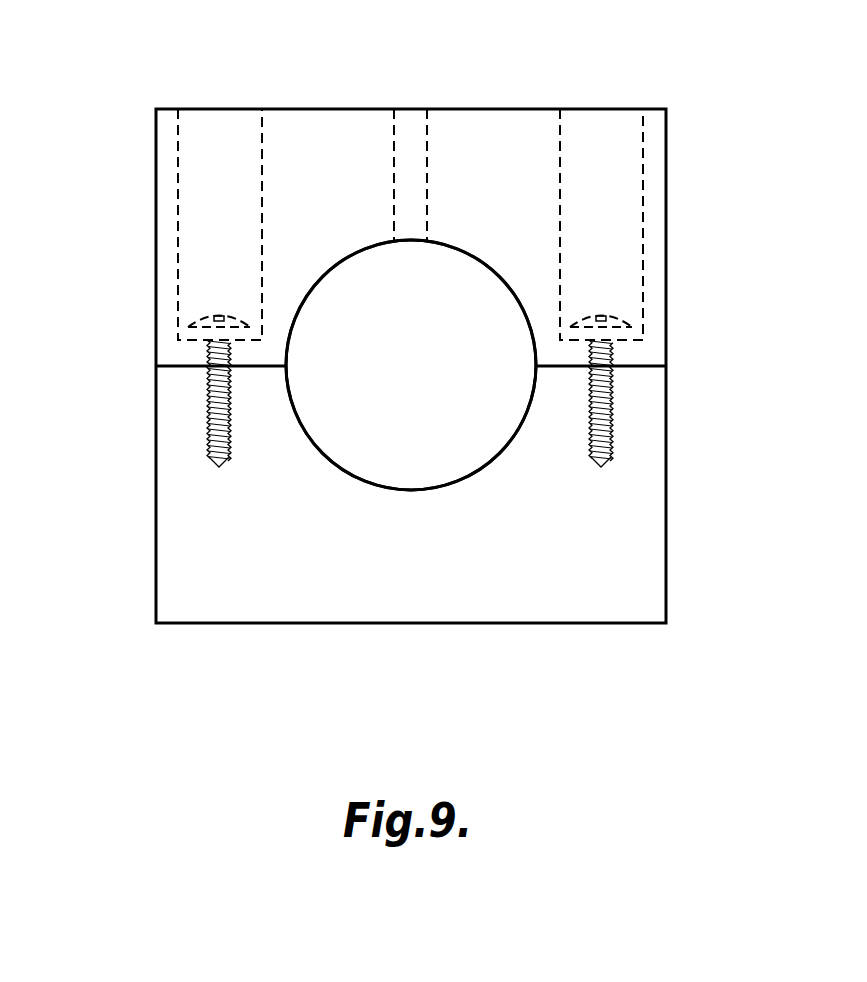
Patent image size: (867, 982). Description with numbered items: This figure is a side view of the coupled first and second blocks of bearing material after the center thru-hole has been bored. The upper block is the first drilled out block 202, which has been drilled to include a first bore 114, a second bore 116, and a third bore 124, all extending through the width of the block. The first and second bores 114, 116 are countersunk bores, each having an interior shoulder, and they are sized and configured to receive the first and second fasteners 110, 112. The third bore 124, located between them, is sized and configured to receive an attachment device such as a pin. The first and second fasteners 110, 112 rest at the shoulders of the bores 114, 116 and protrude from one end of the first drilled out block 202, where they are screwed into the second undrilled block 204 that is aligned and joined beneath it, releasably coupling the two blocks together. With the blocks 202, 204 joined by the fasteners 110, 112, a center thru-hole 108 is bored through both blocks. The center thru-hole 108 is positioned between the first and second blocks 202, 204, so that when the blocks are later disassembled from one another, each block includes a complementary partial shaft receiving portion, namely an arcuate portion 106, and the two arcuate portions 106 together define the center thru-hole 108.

The arcuate portion 106 is at (353, 253).
The center thru-hole 108 is at (333, 435).
The first fastener 110 is at (188, 325).
The second fastener 112 is at (633, 327).
The first bore 114 is at (217, 125).
The second bore 116 is at (600, 122).
The third bore 124 is at (417, 122).
The first drilled out block 202 is at (155, 237).
The second undrilled block 204 is at (155, 498).